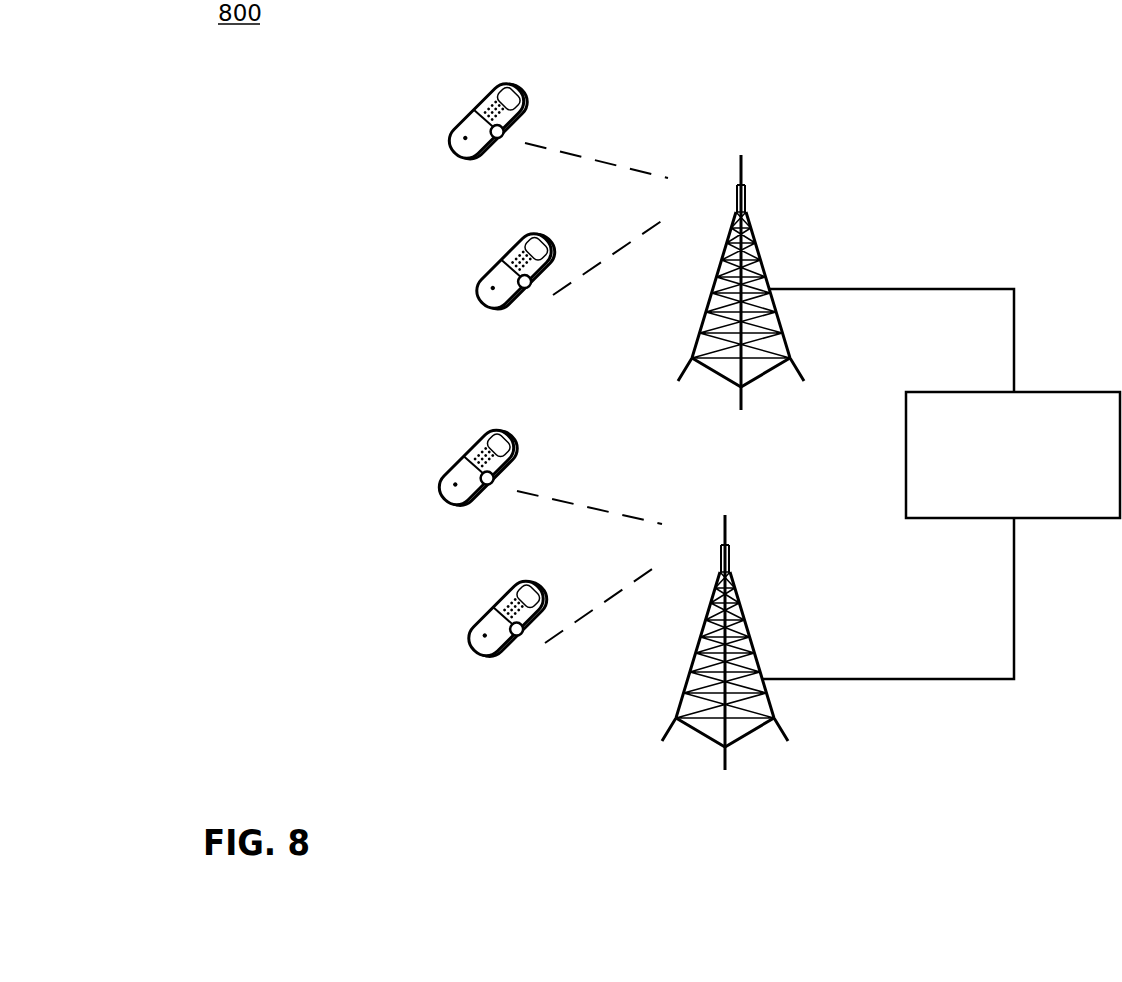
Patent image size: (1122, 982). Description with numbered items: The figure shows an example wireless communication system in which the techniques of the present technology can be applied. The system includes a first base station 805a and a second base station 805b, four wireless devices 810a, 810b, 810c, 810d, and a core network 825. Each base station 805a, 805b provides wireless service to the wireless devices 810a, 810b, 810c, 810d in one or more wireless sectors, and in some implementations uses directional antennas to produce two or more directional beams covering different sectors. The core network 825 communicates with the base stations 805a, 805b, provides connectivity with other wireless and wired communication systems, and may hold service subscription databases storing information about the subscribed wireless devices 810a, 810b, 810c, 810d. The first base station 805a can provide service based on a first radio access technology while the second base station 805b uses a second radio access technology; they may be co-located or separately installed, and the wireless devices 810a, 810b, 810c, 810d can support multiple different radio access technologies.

The base station 805a is at (755, 238).
The base station 805b is at (729, 541).
The wireless device 810a is at (483, 93).
The wireless device 810b is at (511, 243).
The wireless device 810c is at (473, 440).
The wireless device 810d is at (500, 589).
The core network 825 is at (917, 391).